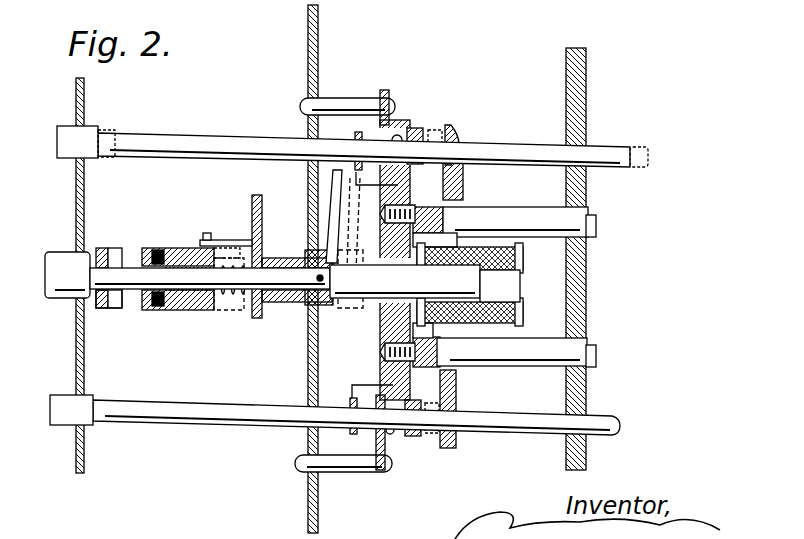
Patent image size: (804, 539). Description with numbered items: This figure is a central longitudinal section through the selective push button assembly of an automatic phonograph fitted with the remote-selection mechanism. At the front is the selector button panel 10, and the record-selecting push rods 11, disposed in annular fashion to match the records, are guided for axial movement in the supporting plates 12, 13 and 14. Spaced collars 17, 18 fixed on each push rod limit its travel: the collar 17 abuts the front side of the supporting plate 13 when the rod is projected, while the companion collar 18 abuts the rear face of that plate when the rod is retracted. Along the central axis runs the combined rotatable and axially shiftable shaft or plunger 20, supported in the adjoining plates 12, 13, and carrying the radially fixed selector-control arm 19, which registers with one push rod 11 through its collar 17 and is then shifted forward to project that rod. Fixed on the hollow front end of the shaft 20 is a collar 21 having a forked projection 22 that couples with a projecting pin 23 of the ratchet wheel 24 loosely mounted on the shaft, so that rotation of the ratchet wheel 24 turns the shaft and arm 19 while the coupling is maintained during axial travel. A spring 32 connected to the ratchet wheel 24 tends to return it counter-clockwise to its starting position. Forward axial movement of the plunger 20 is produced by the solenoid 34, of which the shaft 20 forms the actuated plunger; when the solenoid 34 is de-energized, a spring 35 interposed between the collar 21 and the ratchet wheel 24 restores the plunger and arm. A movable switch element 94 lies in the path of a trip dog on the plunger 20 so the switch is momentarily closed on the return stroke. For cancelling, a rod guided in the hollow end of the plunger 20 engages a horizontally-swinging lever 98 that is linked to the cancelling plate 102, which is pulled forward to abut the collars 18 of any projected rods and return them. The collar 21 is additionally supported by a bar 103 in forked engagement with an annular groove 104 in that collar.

The selector button panel 10 is at (76, 357).
The supporting plate 12 is at (318, 30).
The supporting plate 13 is at (386, 96).
The supporting plate 14 is at (586, 82).
The record-selecting push rods 11 is at (497, 160).
The collar 17 is at (354, 133).
The collar 18 is at (420, 135).
The selector-control arm 19 is at (330, 180).
The shaft or plunger 20 is at (282, 277).
The collar 21 is at (196, 302).
The forked projection 22 is at (206, 238).
The projecting pin 23 is at (222, 240).
The ratchet wheel 24 is at (270, 214).
The spring 32 is at (283, 305).
The solenoid 34 is at (523, 262).
The spring 35 is at (232, 302).
The movable switch element 94 is at (112, 300).
The horizontally-swinging lever 98 is at (113, 264).
The cancelling plate 102 is at (456, 446).
The bar 103 is at (156, 252).
The annular groove 104 is at (150, 306).